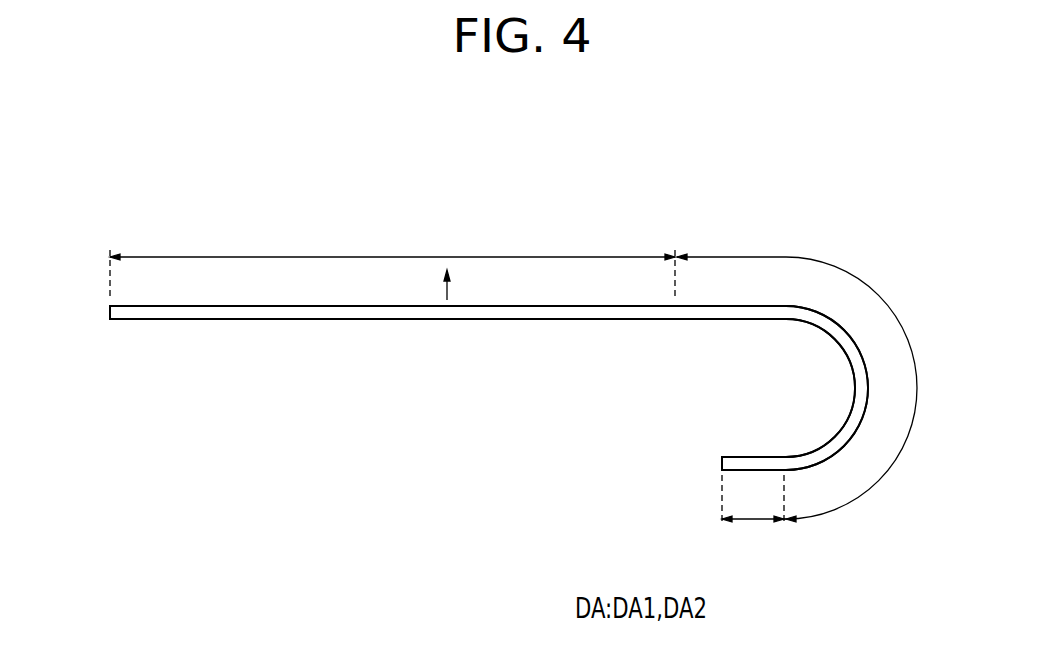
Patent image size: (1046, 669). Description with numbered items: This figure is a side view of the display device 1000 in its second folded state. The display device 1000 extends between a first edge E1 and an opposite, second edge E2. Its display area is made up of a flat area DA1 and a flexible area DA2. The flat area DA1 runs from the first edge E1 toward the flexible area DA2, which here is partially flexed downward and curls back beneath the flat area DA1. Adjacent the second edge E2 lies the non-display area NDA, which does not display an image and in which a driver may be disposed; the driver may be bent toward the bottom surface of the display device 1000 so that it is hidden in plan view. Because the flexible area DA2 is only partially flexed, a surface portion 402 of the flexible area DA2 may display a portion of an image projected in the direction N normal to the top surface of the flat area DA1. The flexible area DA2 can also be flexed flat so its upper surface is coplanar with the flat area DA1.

The display device 1000 is at (832, 180).
The surface portion 402 is at (724, 306).
The first edge E1 is at (110, 312).
The second edge E2 is at (722, 461).
The flat area DA1 is at (392, 264).
The flexible area DA2 is at (818, 388).
The non-display area NDA is at (753, 514).
The direction normal to the top surface of the flat area N is at (457, 285).